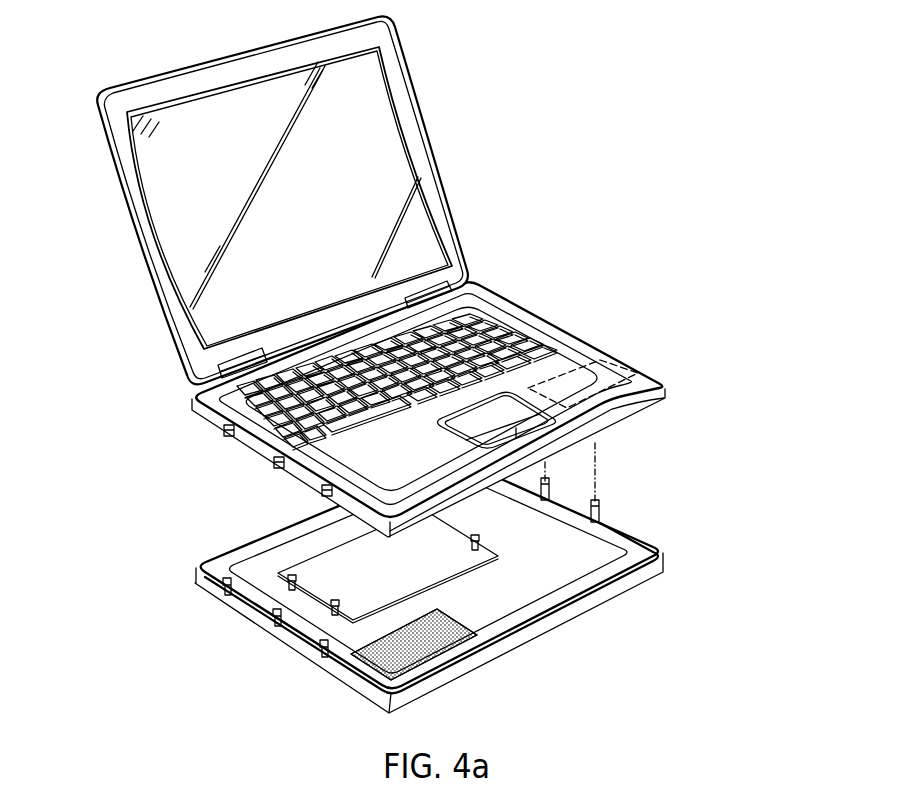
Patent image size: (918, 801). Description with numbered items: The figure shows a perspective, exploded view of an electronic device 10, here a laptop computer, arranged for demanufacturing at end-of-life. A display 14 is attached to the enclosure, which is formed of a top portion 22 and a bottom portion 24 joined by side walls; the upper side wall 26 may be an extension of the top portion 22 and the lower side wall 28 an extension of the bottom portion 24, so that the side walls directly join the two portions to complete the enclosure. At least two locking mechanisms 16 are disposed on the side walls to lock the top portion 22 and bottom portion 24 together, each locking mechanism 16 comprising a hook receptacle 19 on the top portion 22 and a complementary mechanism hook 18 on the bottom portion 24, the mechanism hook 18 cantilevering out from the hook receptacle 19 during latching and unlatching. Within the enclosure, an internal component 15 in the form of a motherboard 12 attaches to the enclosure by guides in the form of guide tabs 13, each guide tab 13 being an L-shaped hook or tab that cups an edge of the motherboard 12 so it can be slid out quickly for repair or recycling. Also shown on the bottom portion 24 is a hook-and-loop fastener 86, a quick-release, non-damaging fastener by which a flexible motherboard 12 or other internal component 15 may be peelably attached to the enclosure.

The electronic device 10 is at (715, 247).
The display 14 is at (160, 190).
The top portion 22 is at (193, 390).
The upper side wall 26 is at (205, 413).
The hook receptacle 19 is at (323, 494).
The locking mechanism 16 is at (323, 649).
The mechanism hook 18 is at (598, 506).
The lower side wall 28 is at (195, 578).
The bottom portion 24 is at (417, 586).
The guide tab 13 is at (477, 547).
The motherboard 12 is at (474, 581).
The internal component 15 is at (490, 562).
The hook-and-loop fastener 86 is at (462, 650).